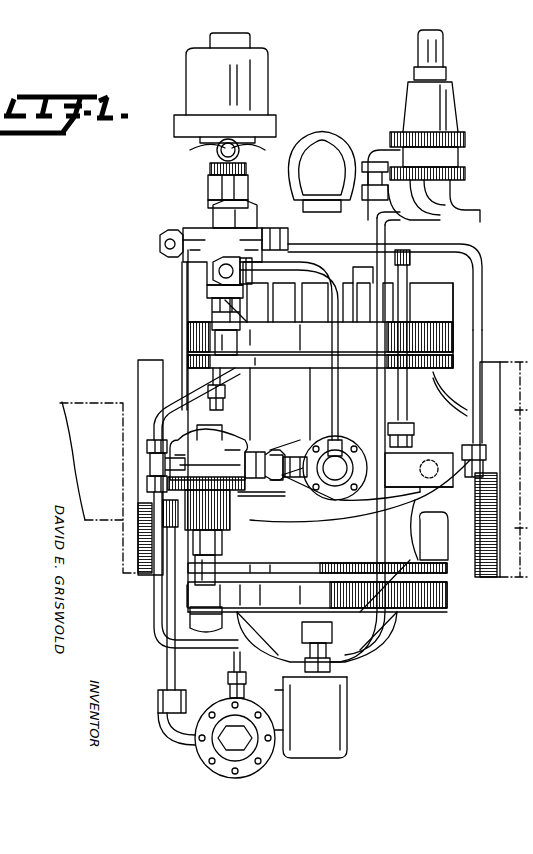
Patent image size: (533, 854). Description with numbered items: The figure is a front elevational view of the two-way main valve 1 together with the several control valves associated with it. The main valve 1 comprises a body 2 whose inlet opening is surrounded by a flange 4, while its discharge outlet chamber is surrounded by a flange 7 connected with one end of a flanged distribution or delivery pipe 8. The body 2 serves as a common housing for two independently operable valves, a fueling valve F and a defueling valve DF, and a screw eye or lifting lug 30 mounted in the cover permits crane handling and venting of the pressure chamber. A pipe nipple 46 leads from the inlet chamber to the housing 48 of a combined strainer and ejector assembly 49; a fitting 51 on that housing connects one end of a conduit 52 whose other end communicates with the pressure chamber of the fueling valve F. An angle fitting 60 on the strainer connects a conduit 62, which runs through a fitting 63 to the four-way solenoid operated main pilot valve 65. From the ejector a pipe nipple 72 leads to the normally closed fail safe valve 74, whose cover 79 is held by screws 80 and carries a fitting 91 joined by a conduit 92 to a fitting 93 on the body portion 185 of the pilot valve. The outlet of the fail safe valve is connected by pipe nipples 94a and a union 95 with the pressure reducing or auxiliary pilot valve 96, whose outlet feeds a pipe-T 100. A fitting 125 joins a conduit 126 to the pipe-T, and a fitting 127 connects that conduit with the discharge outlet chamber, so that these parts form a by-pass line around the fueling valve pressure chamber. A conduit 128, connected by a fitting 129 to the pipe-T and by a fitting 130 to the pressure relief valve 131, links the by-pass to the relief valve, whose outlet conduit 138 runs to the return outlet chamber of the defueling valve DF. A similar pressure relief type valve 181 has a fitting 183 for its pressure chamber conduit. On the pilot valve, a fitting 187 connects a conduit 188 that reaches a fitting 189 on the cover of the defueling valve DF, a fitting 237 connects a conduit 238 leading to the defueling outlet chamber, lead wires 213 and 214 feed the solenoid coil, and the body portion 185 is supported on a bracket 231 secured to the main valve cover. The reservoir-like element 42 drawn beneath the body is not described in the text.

The two-way main valve 1 is at (445, 575).
The body 2 is at (432, 522).
The flange 4 is at (490, 362).
The flange 7 is at (153, 360).
The distribution or delivery pipe 8 is at (91, 480).
The screw eye or lifting lug 30 is at (320, 135).
The reservoir cylinder 42 is at (347, 717).
The pipe nipple 46 is at (420, 469).
The housing 48 is at (419, 496).
The combined strainer and ejector assembly 49 is at (428, 487).
The fitting 51 is at (414, 440).
The conduit 52 is at (418, 380).
The angle fitting 60 is at (466, 480).
The conduit 62 is at (482, 332).
The fitting 63 is at (278, 228).
The four-way solenoid operated main pilot valve 65 is at (272, 80).
The pipe nipple 72 is at (360, 445).
The fail safe valve 74 is at (320, 500).
The cover 79 is at (305, 455).
The screws 80 is at (350, 503).
The fitting 91 is at (330, 445).
The conduit 92 is at (332, 395).
The fitting 93 is at (213, 272).
The pipe nipples 94a is at (282, 490).
The union 95 is at (275, 496).
The pressure reducing or auxiliary pilot valve 96 is at (240, 525).
The pipe-T 100 is at (152, 464).
The fitting 125 is at (147, 447).
The conduit 126 is at (163, 418).
The fitting 127 is at (226, 392).
The conduit 128 is at (154, 622).
The fitting 129 is at (147, 484).
The fitting 130 is at (228, 690).
The pressure relief valve 131 is at (205, 762).
The conduit 138 is at (167, 670).
The pressure relief type valve 181 is at (458, 98).
The fitting 183 is at (368, 150).
The body portion 185 is at (182, 232).
The fitting 187 is at (208, 203).
The conduit 188 is at (377, 553).
The fitting 189 is at (312, 672).
The lead wire 213 is at (192, 156).
The lead wire 214 is at (264, 155).
The bracket 231 is at (373, 265).
The fitting 237 is at (160, 250).
The conduit 238 is at (180, 305).
The fueling valve F is at (432, 322).
The defueling valve DF is at (430, 612).